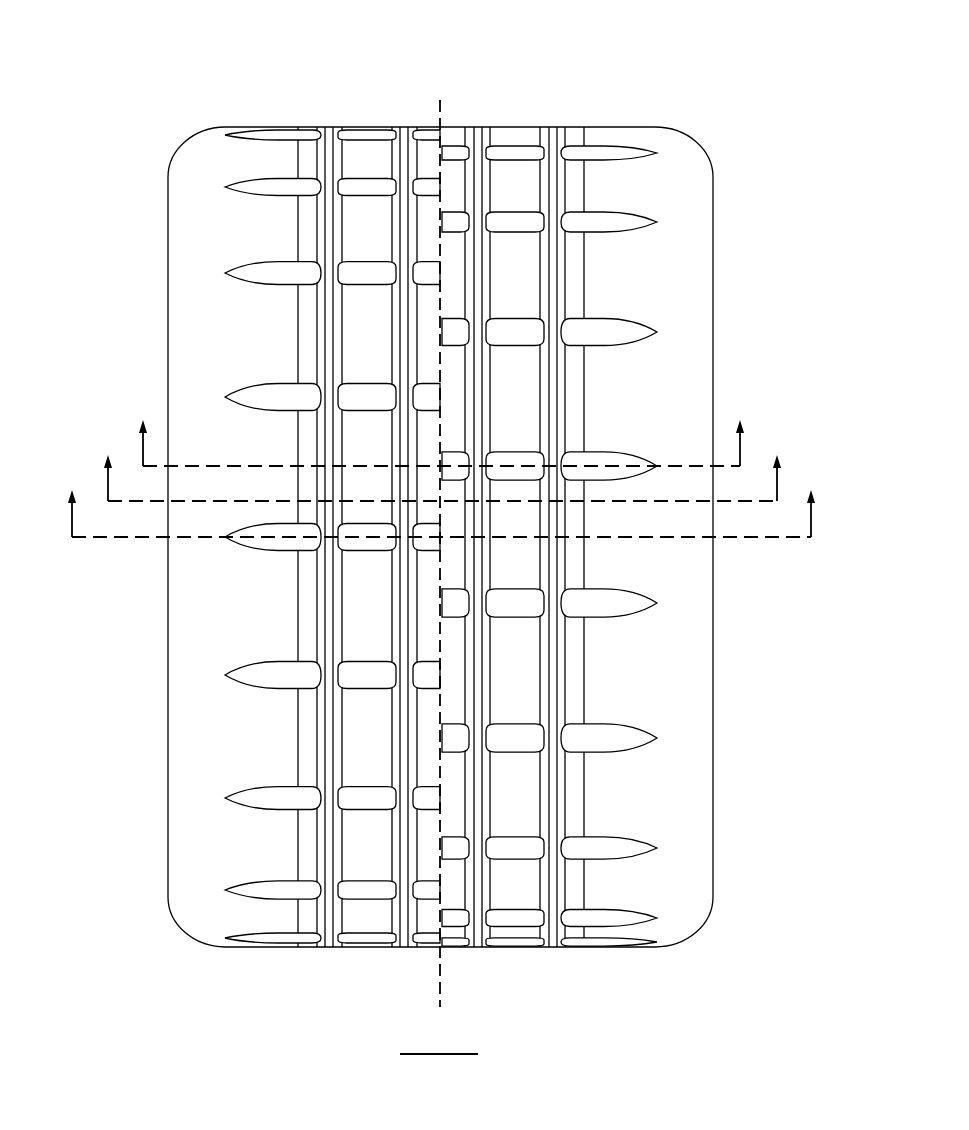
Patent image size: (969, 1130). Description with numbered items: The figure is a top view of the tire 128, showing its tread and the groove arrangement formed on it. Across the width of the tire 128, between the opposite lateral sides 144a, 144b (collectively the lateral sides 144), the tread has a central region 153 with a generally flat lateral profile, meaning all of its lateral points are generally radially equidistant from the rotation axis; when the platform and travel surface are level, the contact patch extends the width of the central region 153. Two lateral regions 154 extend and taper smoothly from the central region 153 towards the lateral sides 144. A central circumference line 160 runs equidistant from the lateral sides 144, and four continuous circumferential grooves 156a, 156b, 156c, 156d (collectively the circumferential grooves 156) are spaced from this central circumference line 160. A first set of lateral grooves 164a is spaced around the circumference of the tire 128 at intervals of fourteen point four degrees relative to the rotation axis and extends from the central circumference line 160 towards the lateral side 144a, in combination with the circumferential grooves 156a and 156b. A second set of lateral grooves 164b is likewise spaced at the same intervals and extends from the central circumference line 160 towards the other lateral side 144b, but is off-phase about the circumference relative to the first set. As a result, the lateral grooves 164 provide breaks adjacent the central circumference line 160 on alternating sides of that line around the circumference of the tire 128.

The tire 128 is at (115, 100).
The central region 153 is at (580, 97).
The lateral regions 154 is at (302, 97).
The lateral sides 144 is at (441, 537).
The lateral side 144a is at (158, 248).
The lateral side 144b is at (725, 236).
The circumferential grooves 156 is at (437, 537).
The circumferential groove 156a is at (318, 356).
The circumferential groove 156b is at (393, 737).
The circumferential groove 156c is at (486, 704).
The circumferential groove 156d is at (565, 386).
The lateral grooves 164 is at (440, 538).
The first set of lateral grooves 164a is at (257, 399).
The second set of lateral grooves 164b is at (617, 327).
The central circumference line 160 is at (440, 1002).